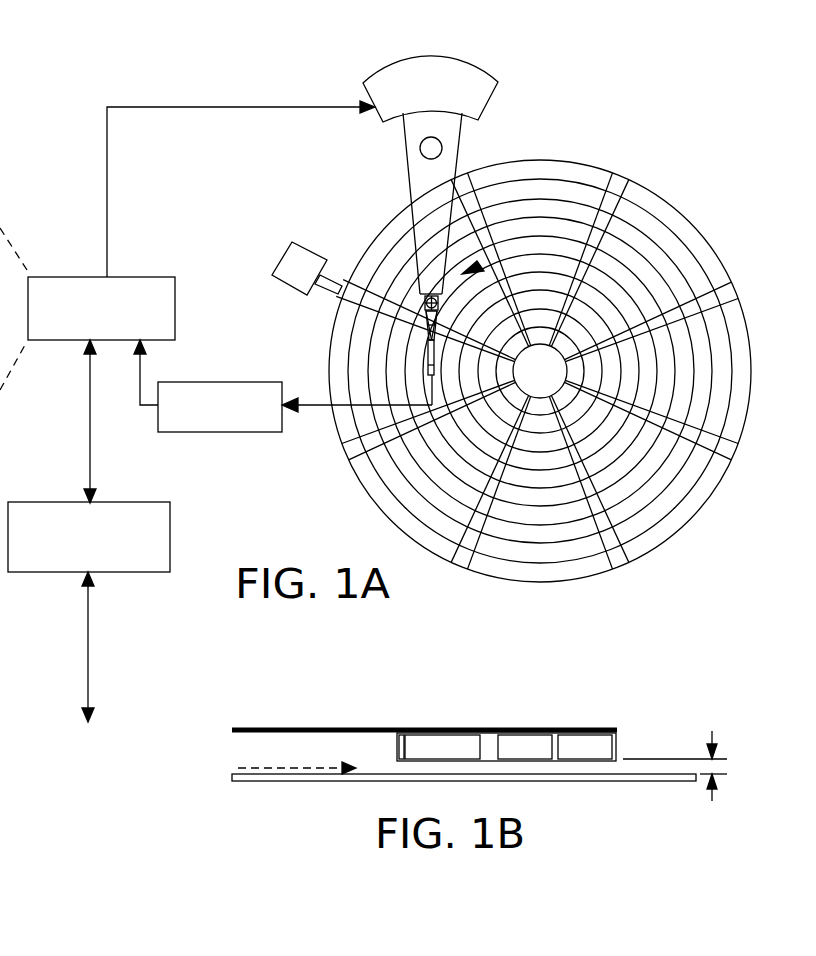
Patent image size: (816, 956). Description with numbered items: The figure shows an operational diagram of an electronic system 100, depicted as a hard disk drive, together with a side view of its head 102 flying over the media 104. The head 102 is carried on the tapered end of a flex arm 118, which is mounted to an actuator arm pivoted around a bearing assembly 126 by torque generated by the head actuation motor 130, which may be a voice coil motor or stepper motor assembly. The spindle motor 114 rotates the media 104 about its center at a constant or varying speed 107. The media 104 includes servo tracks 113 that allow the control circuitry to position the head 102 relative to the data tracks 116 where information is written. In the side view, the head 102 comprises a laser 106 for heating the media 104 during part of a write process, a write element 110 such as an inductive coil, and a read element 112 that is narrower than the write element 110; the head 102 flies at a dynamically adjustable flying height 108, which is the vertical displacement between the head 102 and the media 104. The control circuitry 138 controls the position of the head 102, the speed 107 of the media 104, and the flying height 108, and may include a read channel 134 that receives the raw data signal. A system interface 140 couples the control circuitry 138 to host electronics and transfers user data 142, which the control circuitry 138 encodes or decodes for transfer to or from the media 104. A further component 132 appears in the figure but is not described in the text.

In FIG. 1A, the electronic system 100 is at (676, 62).
In FIG. 1A, the head 102 is at (332, 405).
In FIG. 1B, the head 102 is at (634, 745).
In FIG. 1A, the media 104 is at (672, 212).
In FIG. 1B, the media 104 is at (320, 777).
In FIG. 1B, the laser 106 is at (462, 735).
In FIG. 1A, the speed 107 is at (541, 243).
In FIG. 1B, the speed 107 is at (276, 763).
In FIG. 1B, the flying height 108 is at (714, 733).
In FIG. 1B, the write element 110 is at (540, 735).
In FIG. 1B, the read element 112 is at (605, 735).
In FIG. 1A, the servo tracks 113 is at (604, 546).
In FIG. 1A, the spindle motor 114 is at (560, 372).
In FIG. 1A, the data tracks 116 is at (625, 480).
In FIG. 1A, the flex arm 118 is at (428, 343).
In FIG. 1B, the flex arm 118 is at (350, 727).
In FIG. 1A, the bearing assembly 126 is at (432, 150).
In FIG. 1A, the head actuation motor 130 is at (462, 85).
In FIG. 1A, the sensor 132 is at (305, 275).
In FIG. 1A, the read channel 134 is at (172, 420).
In FIG. 1A, the control circuitry 138 is at (165, 292).
In FIG. 1A, the system interface 140 is at (100, 565).
In FIG. 1A, the user data 142 is at (90, 425).